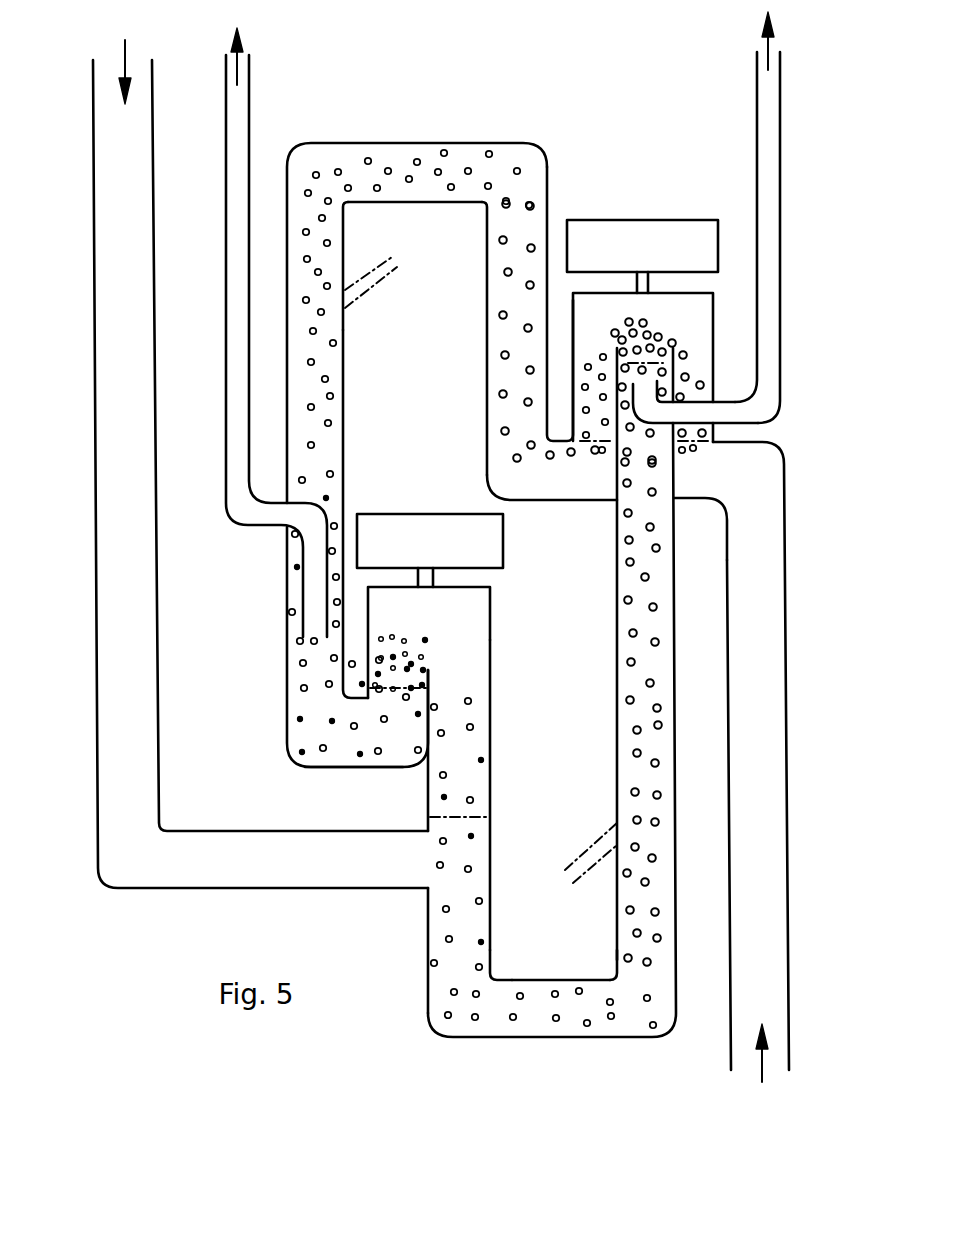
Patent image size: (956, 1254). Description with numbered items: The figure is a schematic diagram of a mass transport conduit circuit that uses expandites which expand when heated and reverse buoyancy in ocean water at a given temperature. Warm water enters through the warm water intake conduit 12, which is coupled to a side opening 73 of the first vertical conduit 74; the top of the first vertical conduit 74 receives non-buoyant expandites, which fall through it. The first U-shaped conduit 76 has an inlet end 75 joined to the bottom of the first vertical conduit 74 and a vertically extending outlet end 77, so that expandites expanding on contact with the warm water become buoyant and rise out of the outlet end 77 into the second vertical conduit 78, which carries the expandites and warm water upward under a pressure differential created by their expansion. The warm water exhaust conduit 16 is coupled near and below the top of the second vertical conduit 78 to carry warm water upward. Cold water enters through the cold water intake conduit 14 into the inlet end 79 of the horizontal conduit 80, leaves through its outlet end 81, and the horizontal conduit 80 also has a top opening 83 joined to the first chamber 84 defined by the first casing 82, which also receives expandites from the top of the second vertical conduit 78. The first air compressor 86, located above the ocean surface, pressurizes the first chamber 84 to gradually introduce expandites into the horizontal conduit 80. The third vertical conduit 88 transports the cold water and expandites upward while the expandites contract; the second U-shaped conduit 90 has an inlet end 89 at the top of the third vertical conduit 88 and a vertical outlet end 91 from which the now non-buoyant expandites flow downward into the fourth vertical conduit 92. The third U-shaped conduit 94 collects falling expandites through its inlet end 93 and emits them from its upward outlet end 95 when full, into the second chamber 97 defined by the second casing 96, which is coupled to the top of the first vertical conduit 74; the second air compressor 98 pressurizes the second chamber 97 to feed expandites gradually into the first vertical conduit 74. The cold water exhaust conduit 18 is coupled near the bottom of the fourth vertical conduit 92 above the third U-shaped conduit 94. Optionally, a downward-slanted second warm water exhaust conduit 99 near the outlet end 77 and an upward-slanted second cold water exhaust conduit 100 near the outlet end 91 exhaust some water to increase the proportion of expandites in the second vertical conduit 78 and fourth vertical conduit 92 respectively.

The warm water intake conduit 12 is at (155, 138).
The cold water intake conduit 14 is at (730, 888).
The warm water exhaust conduit 16 is at (757, 122).
The cold water exhaust conduit 18 is at (250, 107).
The side opening 73 is at (430, 858).
The first vertical conduit 74 is at (493, 840).
The inlet end 75 is at (496, 972).
The first U-shaped conduit 76 is at (590, 980).
The outlet end 77 is at (618, 962).
The second vertical conduit 78 is at (620, 778).
The inlet end 79 is at (752, 440).
The horizontal conduit 80 is at (688, 502).
The outlet end 81 is at (594, 500).
The first casing 82 is at (693, 293).
The top opening 83 is at (705, 440).
The first chamber 84 is at (693, 318).
The first air compressor 86 is at (663, 220).
The third vertical conduit 88 is at (487, 333).
The inlet end 89 is at (487, 225).
The second U-shaped conduit 90 is at (432, 203).
The outlet end 91 is at (345, 218).
The fourth vertical conduit 92 is at (345, 330).
The inlet end 93 is at (287, 718).
The third U-shaped conduit 94 is at (350, 768).
The outlet end 95 is at (400, 688).
The second casing 96 is at (492, 603).
The second chamber 97 is at (465, 636).
The second air compressor 98 is at (434, 514).
The second warm water exhaust conduit 99 is at (572, 861).
The second cold water exhaust conduit 100 is at (386, 276).